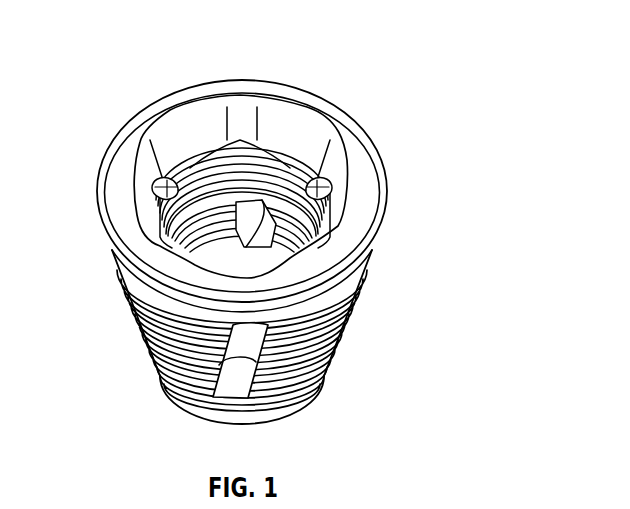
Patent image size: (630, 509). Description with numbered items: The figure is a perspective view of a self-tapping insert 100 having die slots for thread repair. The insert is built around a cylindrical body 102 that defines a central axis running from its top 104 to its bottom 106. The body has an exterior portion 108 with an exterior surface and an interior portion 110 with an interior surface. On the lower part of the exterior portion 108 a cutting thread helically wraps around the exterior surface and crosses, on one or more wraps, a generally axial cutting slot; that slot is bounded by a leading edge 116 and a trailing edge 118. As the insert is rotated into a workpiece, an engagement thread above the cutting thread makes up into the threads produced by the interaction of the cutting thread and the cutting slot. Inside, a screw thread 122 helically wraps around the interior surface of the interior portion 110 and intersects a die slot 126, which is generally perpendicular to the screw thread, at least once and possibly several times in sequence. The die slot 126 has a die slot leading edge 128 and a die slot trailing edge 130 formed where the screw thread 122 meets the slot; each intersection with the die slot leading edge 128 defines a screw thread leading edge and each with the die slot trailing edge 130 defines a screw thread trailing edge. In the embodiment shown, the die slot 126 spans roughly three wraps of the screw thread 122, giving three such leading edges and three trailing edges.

The self-tapping insert 100 is at (375, 269).
The cylindrical body 102 is at (383, 242).
The top 104 is at (122, 142).
The bottom 106 is at (172, 402).
The exterior portion 108 is at (345, 347).
The interior portion 110 is at (225, 150).
The leading edge 116 is at (218, 387).
The trailing edge 118 is at (238, 388).
The screw thread 122 is at (281, 128).
The die slot 126 is at (163, 178).
The die slot leading edge 128 is at (328, 185).
The die slot trailing edge 130 is at (316, 175).